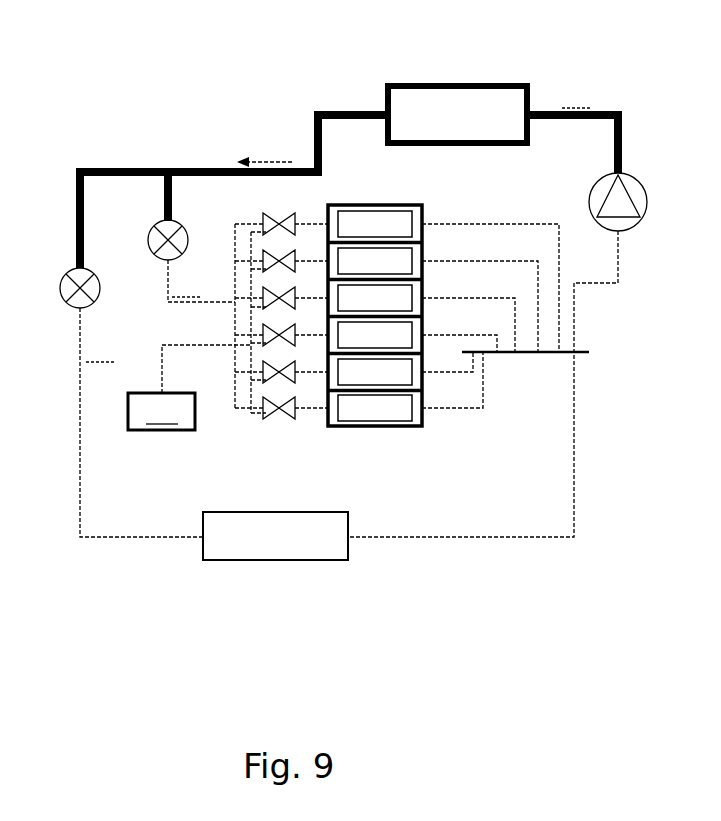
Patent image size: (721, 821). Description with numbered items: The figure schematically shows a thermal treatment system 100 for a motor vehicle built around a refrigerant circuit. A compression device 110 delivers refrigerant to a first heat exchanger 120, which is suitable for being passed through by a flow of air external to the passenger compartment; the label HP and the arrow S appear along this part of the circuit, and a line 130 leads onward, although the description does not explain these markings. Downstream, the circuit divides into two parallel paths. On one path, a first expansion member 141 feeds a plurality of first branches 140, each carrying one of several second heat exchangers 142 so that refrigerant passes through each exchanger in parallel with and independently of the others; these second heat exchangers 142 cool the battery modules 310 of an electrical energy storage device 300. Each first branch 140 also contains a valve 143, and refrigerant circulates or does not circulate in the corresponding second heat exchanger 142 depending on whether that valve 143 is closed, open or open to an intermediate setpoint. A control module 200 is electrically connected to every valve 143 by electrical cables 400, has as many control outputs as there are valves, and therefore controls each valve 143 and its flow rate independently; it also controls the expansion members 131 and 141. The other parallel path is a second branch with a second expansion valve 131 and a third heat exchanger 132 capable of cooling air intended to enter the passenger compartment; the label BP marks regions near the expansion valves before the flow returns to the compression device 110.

The thermal treatment system 100 is at (196, 100).
The compression device 110 is at (628, 178).
The first heat exchanger 120 is at (450, 82).
The main line 130 is at (78, 205).
The second expansion valve 131 is at (65, 305).
The third heat exchanger 132 is at (223, 560).
The first branch 140 is at (305, 222).
The first expansion member 141 is at (152, 253).
The second heat exchanger 142 is at (393, 205).
The valve 143 is at (285, 422).
The control module 200 is at (161, 411).
The electrical energy storage device 300 is at (428, 426).
The battery module 310 is at (375, 316).
The electrical cable 400 is at (163, 358).
The flow direction S is at (265, 160).
The high pressure HP is at (577, 96).
The bypass pressure BP is at (143, 318).